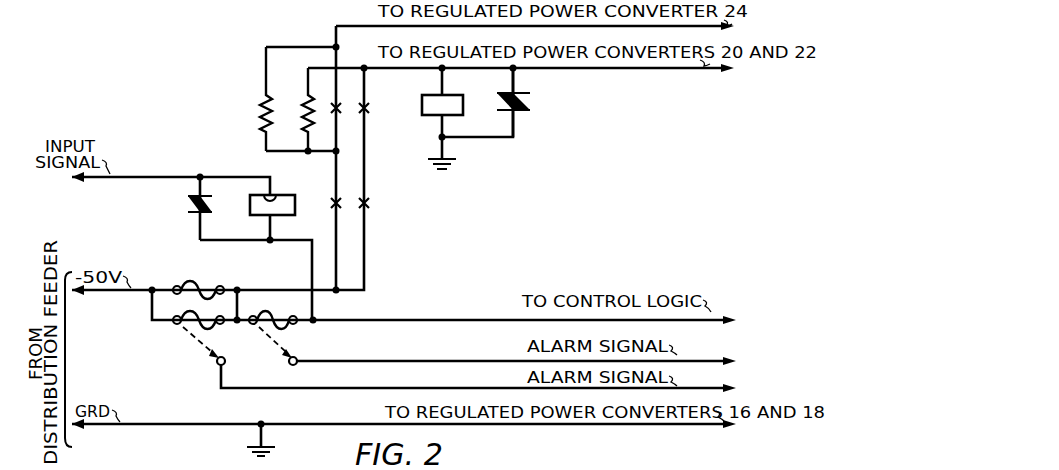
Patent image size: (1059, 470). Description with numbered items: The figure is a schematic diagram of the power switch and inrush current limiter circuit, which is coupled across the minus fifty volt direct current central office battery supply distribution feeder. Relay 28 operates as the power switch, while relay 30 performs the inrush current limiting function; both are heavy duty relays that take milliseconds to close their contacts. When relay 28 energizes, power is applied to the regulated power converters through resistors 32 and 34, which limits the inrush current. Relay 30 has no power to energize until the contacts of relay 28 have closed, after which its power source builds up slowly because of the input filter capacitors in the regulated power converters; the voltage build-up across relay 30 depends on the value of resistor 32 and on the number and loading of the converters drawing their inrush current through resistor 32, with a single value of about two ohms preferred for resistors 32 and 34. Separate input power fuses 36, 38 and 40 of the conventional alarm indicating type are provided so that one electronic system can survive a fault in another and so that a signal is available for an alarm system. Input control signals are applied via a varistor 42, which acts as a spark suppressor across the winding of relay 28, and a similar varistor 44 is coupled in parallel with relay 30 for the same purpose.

The relay 28 is at (282, 194).
The relay 30 is at (425, 104).
The resistor 32 is at (310, 101).
The resistor 34 is at (262, 101).
The input power fuse 36 is at (197, 283).
The input power fuse 38 is at (192, 347).
The input power fuse 40 is at (278, 346).
The varistor 42 is at (188, 210).
The varistor 44 is at (527, 105).